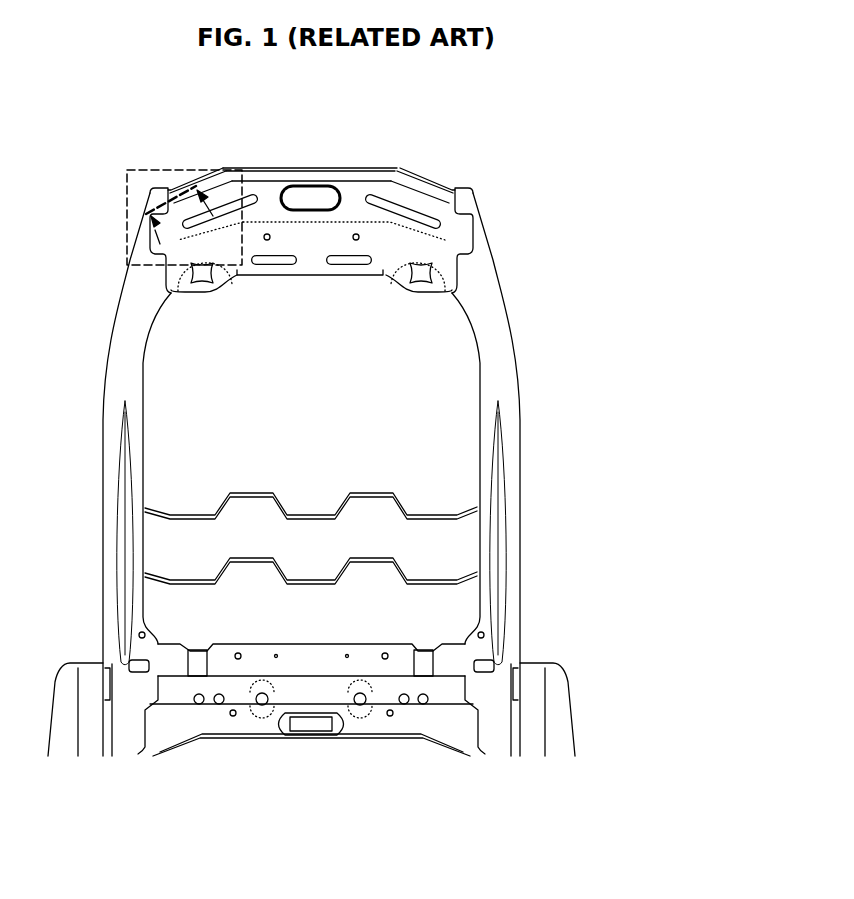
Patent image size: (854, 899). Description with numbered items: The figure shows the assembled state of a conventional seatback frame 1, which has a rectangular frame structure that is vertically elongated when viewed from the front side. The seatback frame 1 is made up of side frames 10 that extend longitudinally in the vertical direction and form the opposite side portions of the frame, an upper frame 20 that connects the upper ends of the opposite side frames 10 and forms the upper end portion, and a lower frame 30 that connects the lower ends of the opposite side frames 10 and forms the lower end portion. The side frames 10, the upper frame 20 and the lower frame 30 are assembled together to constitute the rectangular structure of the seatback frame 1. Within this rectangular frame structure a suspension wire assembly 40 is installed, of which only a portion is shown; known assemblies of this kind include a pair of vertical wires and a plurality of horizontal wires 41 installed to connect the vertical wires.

The seatback frame 1 is at (349, 461).
The side frames 10 is at (538, 371).
The upper frame 20 is at (372, 156).
The lower frame 30 is at (358, 759).
The suspension wire assembly 40 is at (311, 485).
The horizontal wires 41 is at (261, 557).